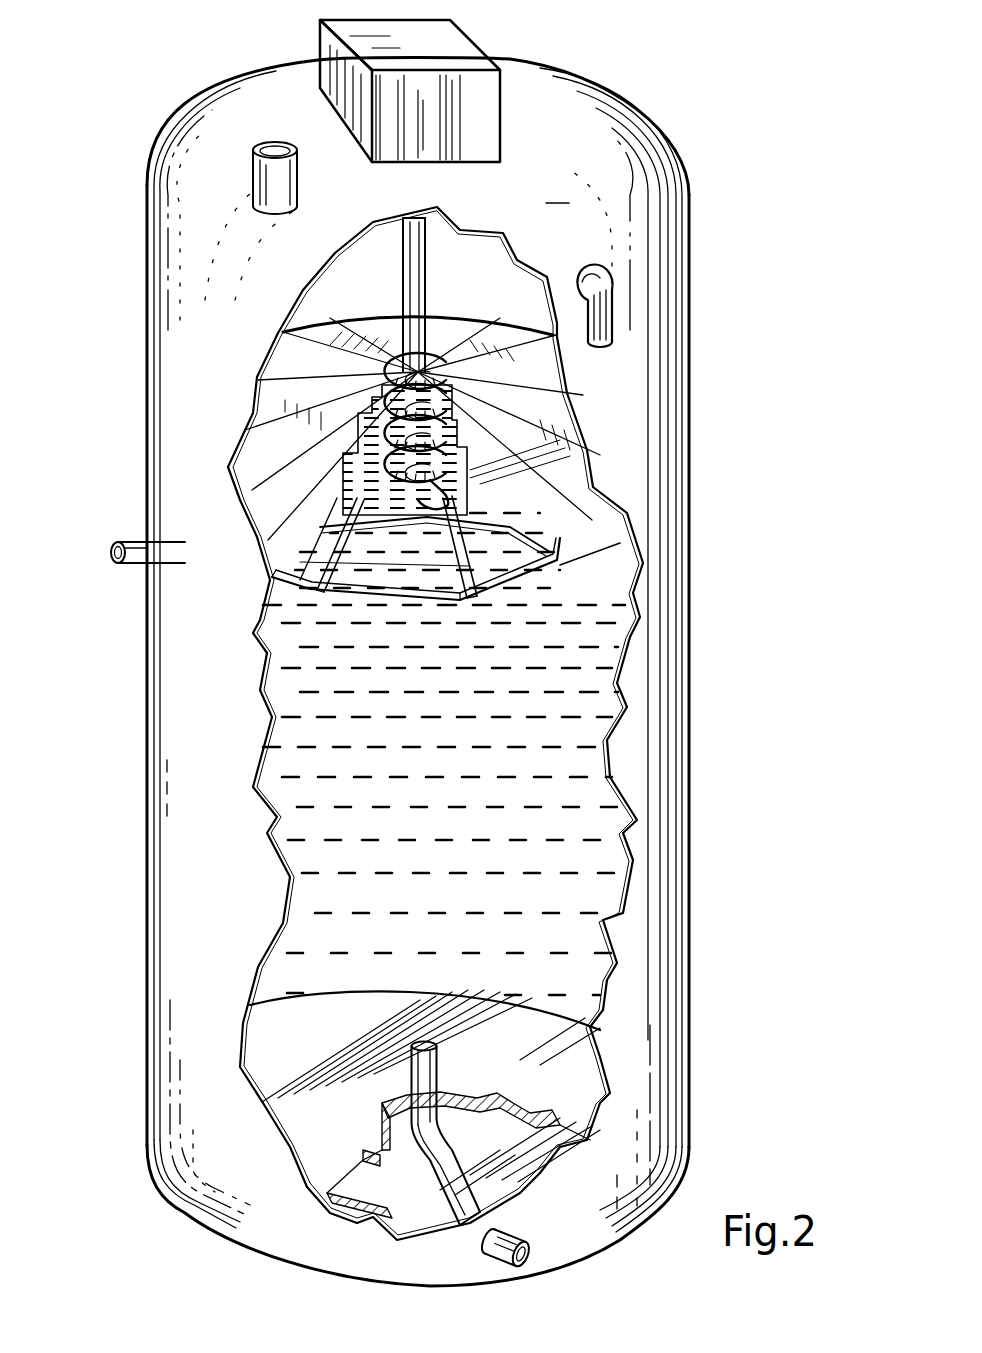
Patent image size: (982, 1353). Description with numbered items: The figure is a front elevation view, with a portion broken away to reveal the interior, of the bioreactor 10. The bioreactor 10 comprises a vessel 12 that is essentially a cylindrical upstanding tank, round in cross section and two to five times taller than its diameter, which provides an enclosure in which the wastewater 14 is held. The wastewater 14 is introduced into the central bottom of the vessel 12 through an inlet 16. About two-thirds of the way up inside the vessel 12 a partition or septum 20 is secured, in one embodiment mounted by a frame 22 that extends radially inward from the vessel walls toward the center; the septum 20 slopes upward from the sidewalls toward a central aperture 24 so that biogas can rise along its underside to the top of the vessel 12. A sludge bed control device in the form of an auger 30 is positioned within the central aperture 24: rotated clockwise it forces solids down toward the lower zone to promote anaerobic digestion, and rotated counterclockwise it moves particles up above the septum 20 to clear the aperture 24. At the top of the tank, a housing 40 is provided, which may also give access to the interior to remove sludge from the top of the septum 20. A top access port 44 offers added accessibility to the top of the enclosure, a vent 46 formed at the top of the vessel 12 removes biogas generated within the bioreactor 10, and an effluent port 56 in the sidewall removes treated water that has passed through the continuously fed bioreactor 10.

The bioreactor 10 is at (232, 122).
The vessel 12 is at (610, 64).
The wastewater 14 is at (444, 800).
The inlet 16 is at (530, 1262).
The septum 20 is at (280, 499).
The frame 22 is at (476, 564).
The central aperture 24 is at (450, 362).
The auger 30 is at (402, 283).
The housing 40 is at (410, 91).
The top access port 44 is at (272, 183).
The vent 46 is at (600, 280).
The effluent port 56 is at (138, 558).